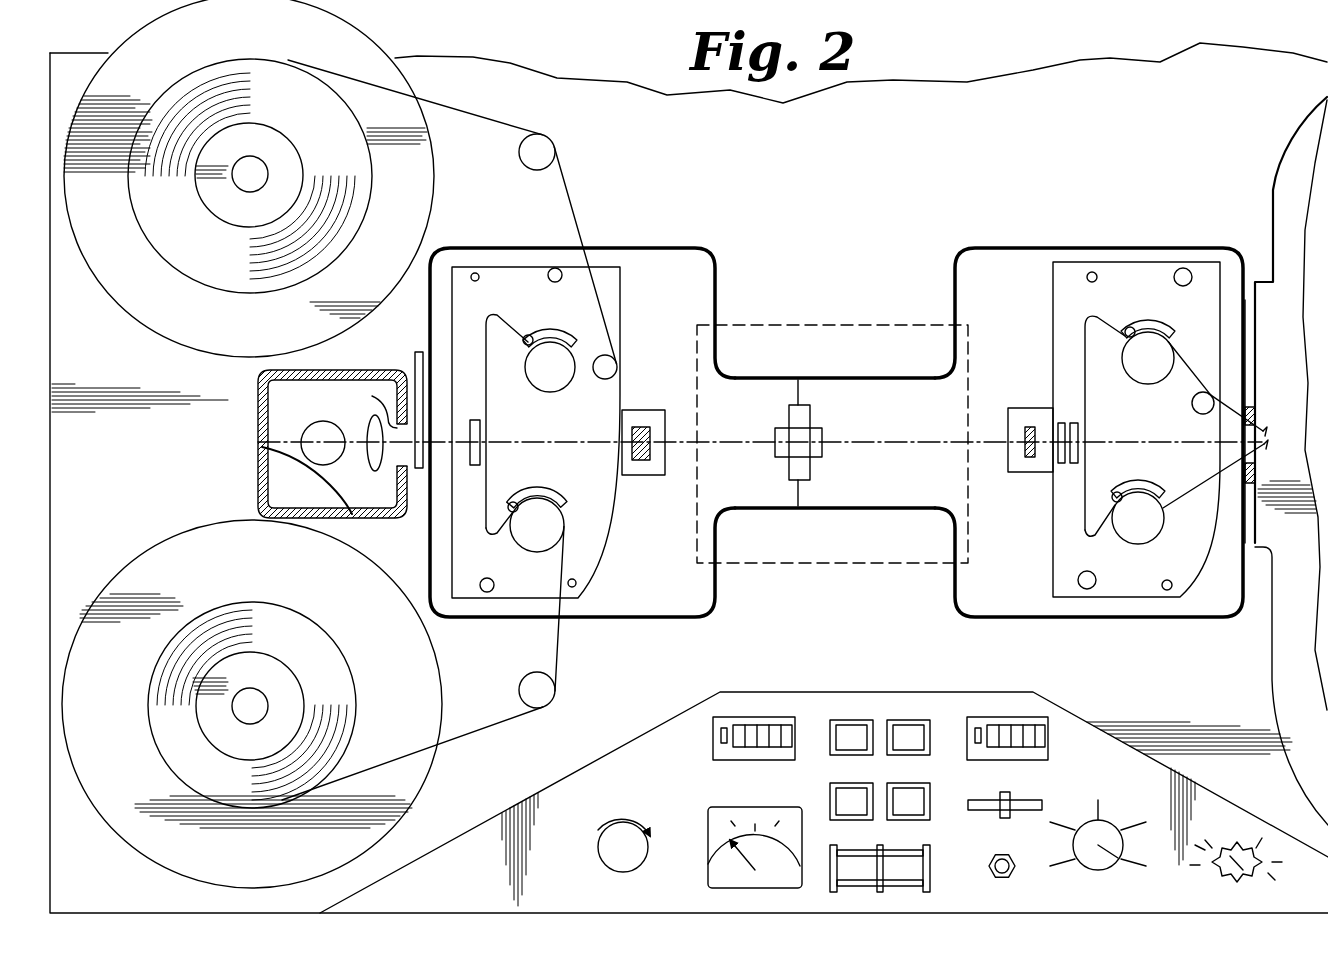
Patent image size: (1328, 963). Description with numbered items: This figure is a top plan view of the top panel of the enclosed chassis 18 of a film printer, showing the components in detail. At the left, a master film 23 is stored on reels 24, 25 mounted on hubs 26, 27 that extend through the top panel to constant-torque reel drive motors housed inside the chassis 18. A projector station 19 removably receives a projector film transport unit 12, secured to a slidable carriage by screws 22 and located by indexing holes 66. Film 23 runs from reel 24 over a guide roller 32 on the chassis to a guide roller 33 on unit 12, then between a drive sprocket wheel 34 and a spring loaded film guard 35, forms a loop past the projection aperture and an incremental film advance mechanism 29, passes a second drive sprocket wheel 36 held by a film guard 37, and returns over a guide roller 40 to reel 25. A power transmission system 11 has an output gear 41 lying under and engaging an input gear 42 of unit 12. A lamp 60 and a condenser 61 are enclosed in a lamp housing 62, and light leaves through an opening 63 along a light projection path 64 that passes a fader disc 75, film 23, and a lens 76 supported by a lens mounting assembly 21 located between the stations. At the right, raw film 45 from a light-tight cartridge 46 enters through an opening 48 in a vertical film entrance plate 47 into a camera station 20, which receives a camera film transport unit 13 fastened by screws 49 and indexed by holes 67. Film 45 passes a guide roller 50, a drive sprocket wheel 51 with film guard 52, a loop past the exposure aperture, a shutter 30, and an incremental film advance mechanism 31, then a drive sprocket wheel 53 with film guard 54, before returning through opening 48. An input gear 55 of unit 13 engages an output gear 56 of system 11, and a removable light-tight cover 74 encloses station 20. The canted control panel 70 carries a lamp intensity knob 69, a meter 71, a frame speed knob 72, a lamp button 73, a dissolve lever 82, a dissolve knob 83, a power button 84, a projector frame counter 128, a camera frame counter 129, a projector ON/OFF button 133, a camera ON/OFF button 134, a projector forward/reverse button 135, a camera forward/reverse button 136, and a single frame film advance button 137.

The power transmission system 11 is at (730, 565).
The projector film transport unit 12 is at (619, 533).
The camera film transport unit 13 is at (1197, 565).
The enclosed chassis 18 is at (1283, 121).
The projector station 19 is at (632, 596).
The camera station 20 is at (995, 596).
The lens mounting assembly 21 is at (735, 416).
The screws 22 is at (556, 268).
The master film 23 is at (500, 118).
The reel 24 is at (227, 357).
The reel 25 is at (218, 520).
The hub 26 is at (268, 175).
The hub 27 is at (268, 705).
The incremental film advance mechanism 29 is at (476, 418).
The shutter 30 is at (1061, 464).
The incremental film advance mechanism 31 is at (1075, 421).
The guide roller 32 is at (519, 155).
The guide roller 33 is at (602, 355).
The drive sprocket wheel 34 is at (556, 391).
The film guard 35 is at (556, 328).
The drive sprocket wheel 36 is at (516, 541).
The film guard 37 is at (556, 492).
The guide roller 40 is at (519, 686).
The output gear 41 is at (641, 462).
The input gear 42 is at (641, 426).
The raw film 45 is at (1182, 362).
The light-tight cartridge 46 is at (1272, 176).
The film entrance plate 47 is at (1250, 556).
The opening 48 is at (1243, 442).
The screws 49 is at (1179, 286).
The guide roller 50 is at (1192, 405).
The drive sprocket wheel 51 is at (1150, 376).
The film guard 52 is at (1150, 320).
The drive sprocket wheel 53 is at (1141, 544).
The film guard 54 is at (1149, 488).
The input gear 55 is at (1030, 472).
The output gear 56 is at (1030, 425).
The lamp 60 is at (318, 422).
The condenser 61 is at (379, 468).
The lamp housing 62 is at (379, 518).
The opening 63 is at (372, 397).
The light projection path 64 is at (888, 446).
The indexing holes 66 is at (476, 273).
The indexing holes 67 is at (1092, 272).
The knob 69 is at (648, 858).
The control panel 70 is at (1121, 789).
The meter 71 is at (708, 883).
The knob 72 is at (1085, 866).
The lamp button 73 is at (920, 718).
The light-tight cover 74 is at (810, 465).
The fader disc 75 is at (415, 355).
The lens 76 is at (812, 435).
The dissolve lever 82 is at (1012, 798).
The dissolve knob 83 is at (1256, 873).
The power button 84 is at (839, 718).
The projector frame counter 128 is at (713, 742).
The camera frame counter 129 is at (1050, 742).
The projector ON/OFF button 133 is at (830, 793).
The camera ON/OFF button 134 is at (901, 782).
The projector forward/reverse button 135 is at (853, 868).
The camera forward/reverse button 136 is at (903, 870).
The single frame film advance button 137 is at (995, 858).